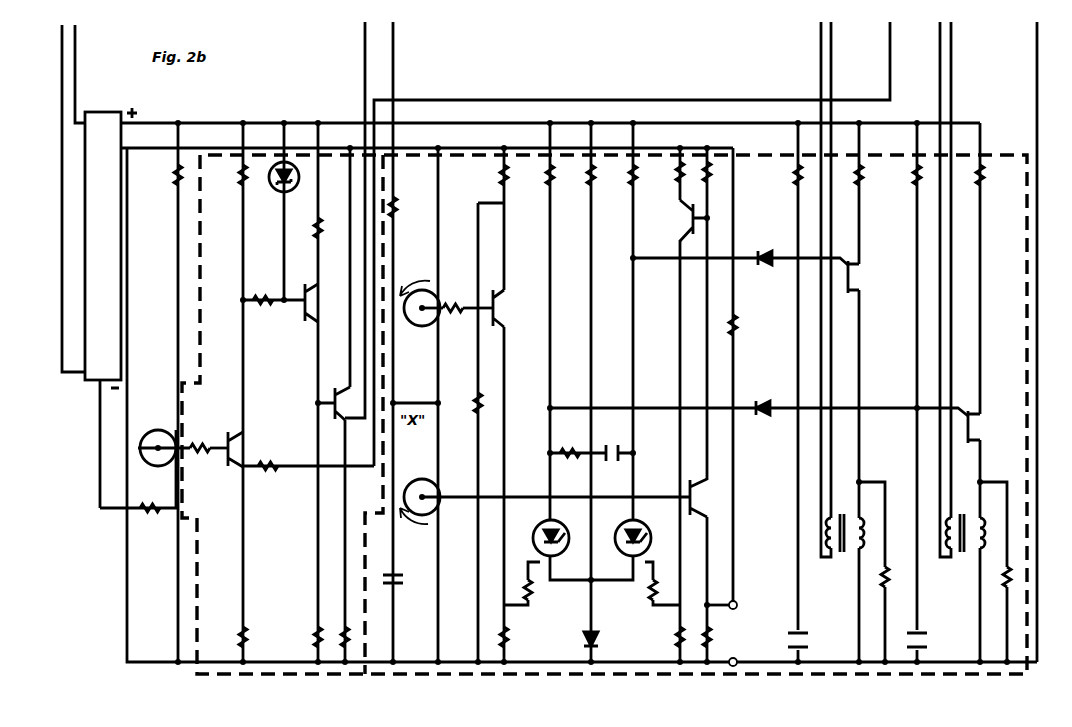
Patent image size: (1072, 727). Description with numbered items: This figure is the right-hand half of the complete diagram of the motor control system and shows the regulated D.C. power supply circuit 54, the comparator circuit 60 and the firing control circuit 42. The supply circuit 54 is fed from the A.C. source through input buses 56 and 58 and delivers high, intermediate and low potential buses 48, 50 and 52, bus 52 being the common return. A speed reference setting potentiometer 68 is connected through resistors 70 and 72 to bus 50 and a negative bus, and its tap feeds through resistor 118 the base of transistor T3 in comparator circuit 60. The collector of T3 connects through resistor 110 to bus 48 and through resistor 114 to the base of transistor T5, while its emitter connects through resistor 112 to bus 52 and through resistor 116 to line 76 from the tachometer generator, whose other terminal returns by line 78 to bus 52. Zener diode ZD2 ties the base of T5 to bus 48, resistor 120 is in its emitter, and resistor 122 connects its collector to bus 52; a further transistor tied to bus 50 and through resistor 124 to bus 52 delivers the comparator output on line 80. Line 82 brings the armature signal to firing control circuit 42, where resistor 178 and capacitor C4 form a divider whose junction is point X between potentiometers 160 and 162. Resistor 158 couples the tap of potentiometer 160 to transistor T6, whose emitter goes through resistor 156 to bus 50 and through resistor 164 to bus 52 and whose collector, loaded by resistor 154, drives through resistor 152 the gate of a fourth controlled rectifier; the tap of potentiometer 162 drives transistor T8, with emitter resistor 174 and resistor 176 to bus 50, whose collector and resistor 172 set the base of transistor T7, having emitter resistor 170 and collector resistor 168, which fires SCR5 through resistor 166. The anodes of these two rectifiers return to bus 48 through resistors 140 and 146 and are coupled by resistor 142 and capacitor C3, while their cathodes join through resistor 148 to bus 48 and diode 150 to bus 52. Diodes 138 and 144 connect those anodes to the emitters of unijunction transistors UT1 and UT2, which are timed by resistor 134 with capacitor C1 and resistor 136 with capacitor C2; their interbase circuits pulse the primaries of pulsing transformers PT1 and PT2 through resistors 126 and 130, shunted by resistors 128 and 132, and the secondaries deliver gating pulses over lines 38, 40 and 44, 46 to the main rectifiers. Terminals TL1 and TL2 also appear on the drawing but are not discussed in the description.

The input bus 56 is at (62, 74).
The input bus 58 is at (78, 74).
The regulated D.C. power supply circuit 54 is at (110, 239).
The high potential bus 48 is at (225, 122).
The intermediate potential bus 50 is at (158, 148).
The low potential bus 52 is at (127, 651).
The comparator circuit 60 is at (197, 675).
The line 80 is at (365, 50).
The line 82 is at (393, 50).
The resistor 178 is at (397, 200).
The capacitor C4 is at (403, 583).
The line 76 is at (890, 80).
The line 44 is at (821, 50).
The line 46 is at (831, 60).
The line 38 is at (940, 50).
The line 40 is at (951, 52).
The line 78 is at (1037, 74).
The resistor 70 is at (174, 176).
The resistor 72 is at (152, 520).
The speed reference setting potentiometer 68 is at (152, 430).
The resistor 118 is at (198, 460).
The N-P-N transistor T3 is at (235, 448).
The resistor 116 is at (270, 478).
The resistor 110 is at (240, 186).
The resistor 112 is at (247, 627).
The resistor 114 is at (264, 310).
The zener diode ZD2 is at (276, 190).
The P-N-P transistor T5 is at (308, 300).
The resistor 120 is at (324, 220).
The resistor 122 is at (312, 638).
The resistor 124 is at (340, 628).
The potentiometer 160 is at (412, 330).
The resistor 158 is at (455, 298).
The P-N-P transistor T6 is at (498, 308).
The resistor 156 is at (500, 174).
The resistor 164 is at (474, 396).
The potentiometer 162 is at (418, 478).
The resistor 140 is at (544, 190).
The resistor 148 is at (585, 190).
The diode 150 is at (596, 636).
The resistor 146 is at (626, 190).
The silicon controlled rectifier SCR5 is at (648, 530).
The resistor 142 is at (572, 443).
The capacitor C3 is at (612, 445).
The resistor 152 is at (532, 588).
The resistor 154 is at (508, 637).
The resistor 166 is at (649, 594).
The resistor 170 is at (676, 184).
The resistor 168 is at (676, 642).
The P-N-P transistor T7 is at (690, 218).
The resistor 172 is at (711, 184).
The N-P-N transistor T8 is at (697, 497).
The resistor 174 is at (712, 636).
The terminal TL1 is at (737, 604).
The terminal TL2 is at (733, 668).
The firing control circuit 42 is at (660, 678).
The resistor 176 is at (740, 325).
The diode 144 is at (768, 270).
The diode 138 is at (766, 420).
The resistor 136 is at (792, 174).
The capacitor C2 is at (808, 640).
The unijunction transistor UT2 is at (905, 283).
The resistor 130 is at (864, 178).
The pulsing transformer PT2 is at (842, 538).
The resistor 132 is at (888, 588).
The resistor 134 is at (912, 186).
The capacitor C1 is at (927, 640).
The unijunction transistor UT1 is at (1022, 435).
The resistor 126 is at (986, 172).
The pulsing transformer PT1 is at (961, 538).
The resistor 128 is at (1003, 588).